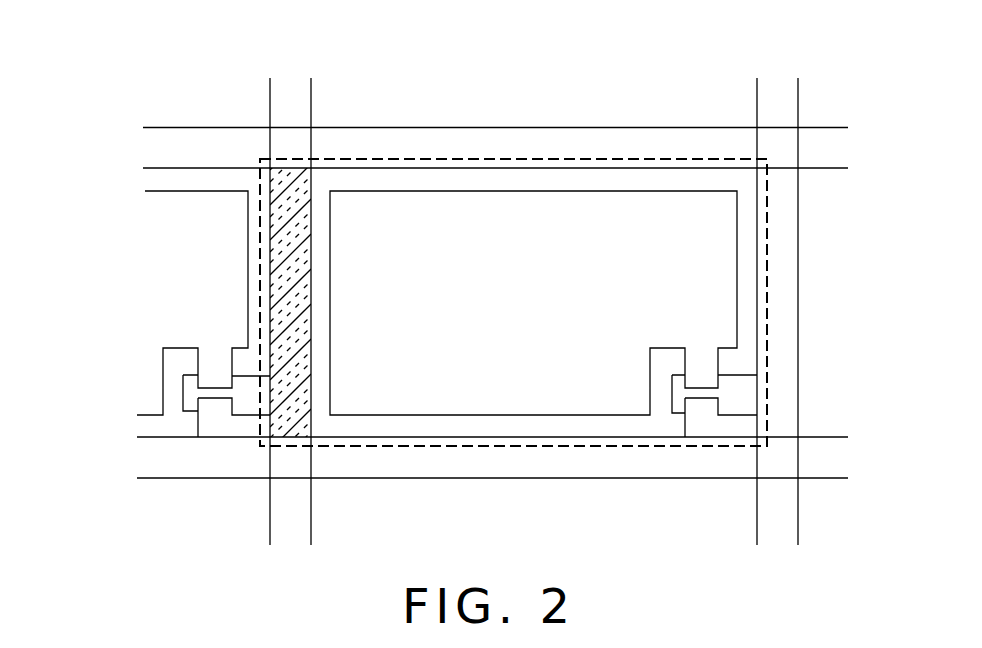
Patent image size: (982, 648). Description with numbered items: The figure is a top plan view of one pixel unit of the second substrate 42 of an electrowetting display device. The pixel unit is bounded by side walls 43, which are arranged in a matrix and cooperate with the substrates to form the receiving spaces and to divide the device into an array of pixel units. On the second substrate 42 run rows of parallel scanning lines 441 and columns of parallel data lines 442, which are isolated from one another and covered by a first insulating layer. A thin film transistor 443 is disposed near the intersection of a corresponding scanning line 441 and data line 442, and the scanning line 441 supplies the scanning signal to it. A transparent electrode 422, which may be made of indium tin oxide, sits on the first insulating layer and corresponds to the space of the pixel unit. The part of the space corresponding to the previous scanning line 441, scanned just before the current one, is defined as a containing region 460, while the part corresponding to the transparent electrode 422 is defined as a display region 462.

The second substrate 42 is at (511, 48).
The side wall 43 is at (680, 158).
The transparent electrode 422 is at (708, 259).
The scanning line 441 is at (287, 88).
The data line 442 is at (172, 147).
The thin film transistor 443 is at (660, 405).
The containing region 460 is at (299, 193).
The display region 462 is at (559, 220).